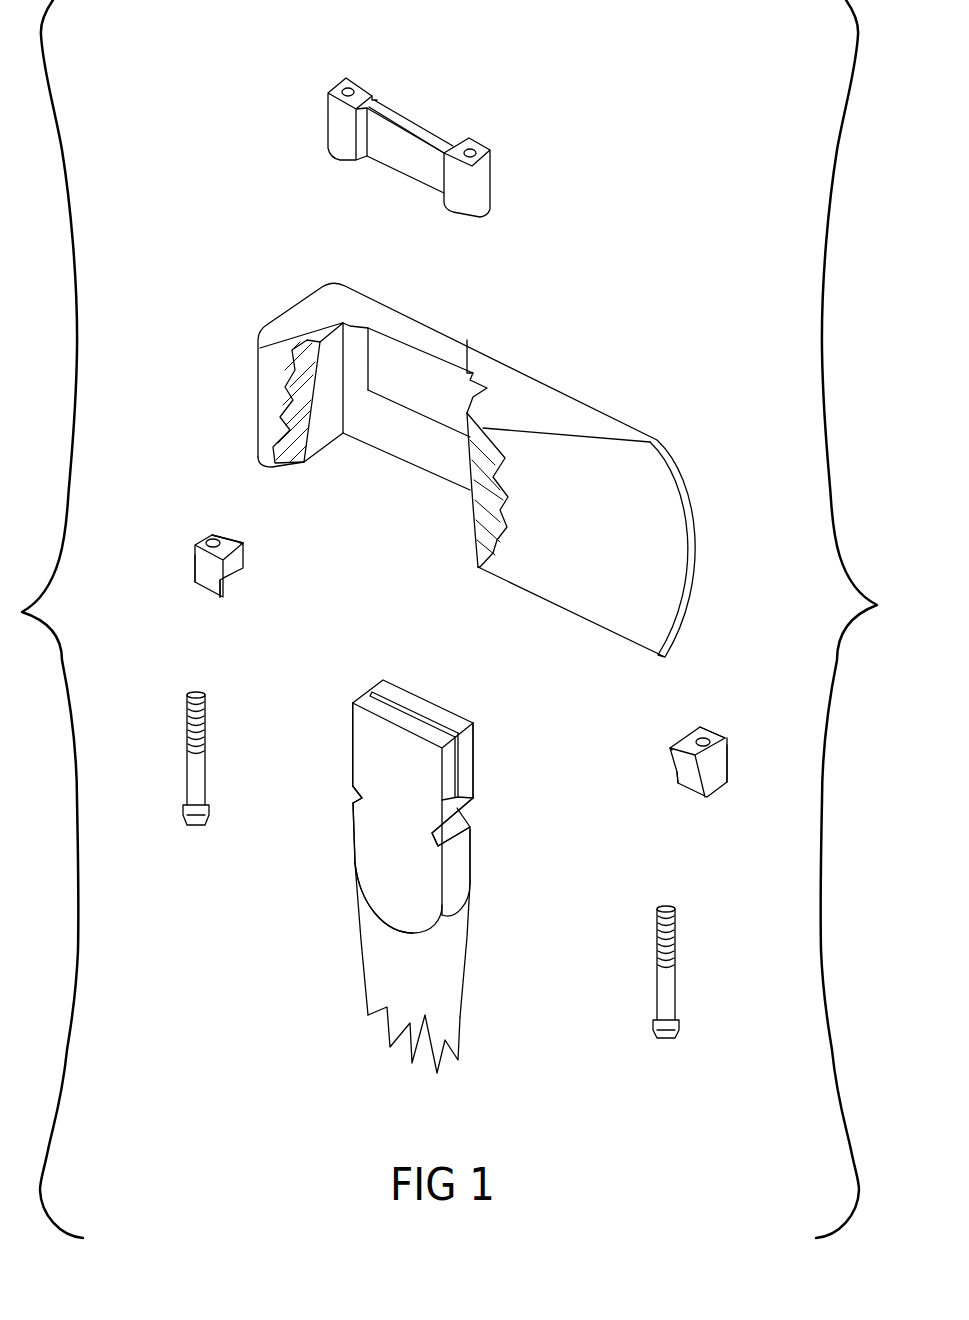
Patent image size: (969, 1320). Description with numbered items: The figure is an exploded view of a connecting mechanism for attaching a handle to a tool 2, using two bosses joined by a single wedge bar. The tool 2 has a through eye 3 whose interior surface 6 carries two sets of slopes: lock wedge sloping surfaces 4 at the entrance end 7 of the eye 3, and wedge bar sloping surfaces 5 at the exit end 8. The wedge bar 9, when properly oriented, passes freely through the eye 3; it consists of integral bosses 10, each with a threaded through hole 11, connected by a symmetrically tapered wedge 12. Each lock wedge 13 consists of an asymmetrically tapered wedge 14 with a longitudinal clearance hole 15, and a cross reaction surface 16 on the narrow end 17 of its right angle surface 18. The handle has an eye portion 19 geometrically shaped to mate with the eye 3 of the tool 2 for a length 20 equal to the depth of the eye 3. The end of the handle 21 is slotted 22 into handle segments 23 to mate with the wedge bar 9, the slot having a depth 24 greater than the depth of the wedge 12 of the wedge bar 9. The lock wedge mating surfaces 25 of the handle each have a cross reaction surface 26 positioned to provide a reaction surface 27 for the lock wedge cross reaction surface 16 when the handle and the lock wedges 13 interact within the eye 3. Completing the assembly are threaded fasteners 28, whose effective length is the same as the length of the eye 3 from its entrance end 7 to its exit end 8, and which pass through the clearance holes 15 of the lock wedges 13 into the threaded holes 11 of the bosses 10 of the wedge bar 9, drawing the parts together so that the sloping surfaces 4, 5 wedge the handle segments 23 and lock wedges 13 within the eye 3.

The tool 2 is at (497, 457).
The through eye 3 is at (530, 445).
The lock wedge sloping surfaces 4 is at (390, 466).
The wedge bar sloping surfaces 5 is at (408, 315).
The interior surface 6 is at (287, 359).
The entrance end 7 is at (415, 472).
The exit end 8 is at (450, 344).
The wedge bar 9 is at (411, 126).
The integral bosses 10 is at (411, 142).
The threaded through hole 11 is at (456, 92).
The symmetrically tapered wedge 12 is at (371, 167).
The lock wedge 13 is at (452, 655).
The asymmetrically tapered wedge 14 is at (452, 668).
The longitudinal clearance hole 15 is at (462, 621).
The cross reaction surface 16 is at (456, 646).
The narrow end 17 is at (483, 599).
The right angle surface 18 is at (449, 691).
The eye portion 19 is at (437, 857).
The length 20 is at (334, 898).
The end of the handle 21 is at (452, 689).
The slot 22 is at (510, 765).
The handle segments 23 is at (411, 738).
The depth 24 is at (496, 806).
The lock wedge mating surfaces 25 is at (516, 888).
The cross reaction surface 26 is at (437, 836).
The reaction surface 27 is at (410, 840).
The threaded fasteners 28 is at (434, 865).